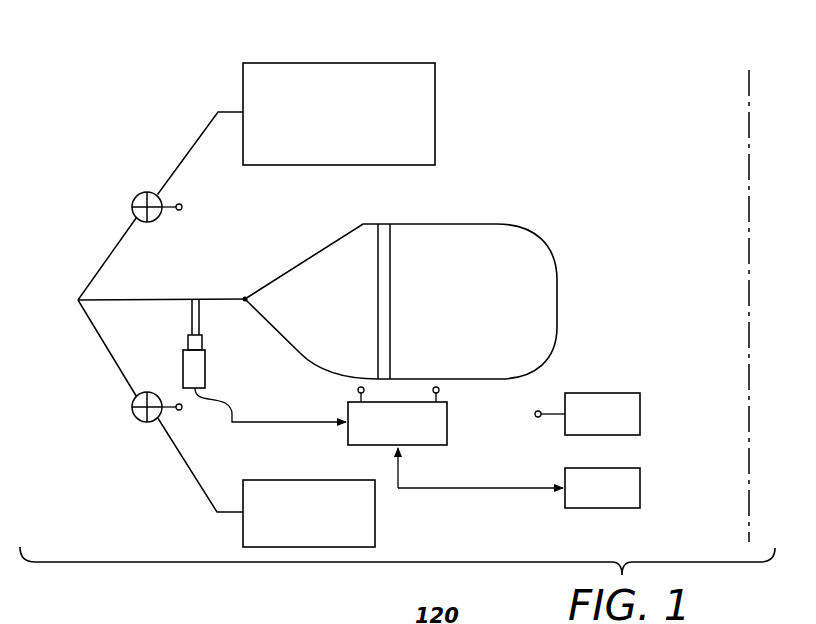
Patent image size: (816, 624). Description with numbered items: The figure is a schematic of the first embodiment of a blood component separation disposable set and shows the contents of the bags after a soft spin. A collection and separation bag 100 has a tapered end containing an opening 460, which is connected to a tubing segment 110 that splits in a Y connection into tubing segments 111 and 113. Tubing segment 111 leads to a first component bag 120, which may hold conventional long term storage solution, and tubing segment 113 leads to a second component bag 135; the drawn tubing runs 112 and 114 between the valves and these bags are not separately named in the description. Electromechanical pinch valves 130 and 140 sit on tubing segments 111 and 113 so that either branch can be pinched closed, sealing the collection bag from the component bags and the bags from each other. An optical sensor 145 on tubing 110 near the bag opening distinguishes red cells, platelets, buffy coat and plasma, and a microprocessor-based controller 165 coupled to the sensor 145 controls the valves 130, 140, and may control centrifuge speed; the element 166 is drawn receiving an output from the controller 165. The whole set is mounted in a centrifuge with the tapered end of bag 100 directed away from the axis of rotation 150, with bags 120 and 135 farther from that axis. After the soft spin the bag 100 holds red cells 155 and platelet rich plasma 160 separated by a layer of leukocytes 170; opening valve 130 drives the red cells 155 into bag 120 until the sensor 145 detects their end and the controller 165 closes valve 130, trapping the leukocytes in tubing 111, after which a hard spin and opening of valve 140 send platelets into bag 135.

The collection and separation bag 100 is at (533, 233).
The tubing segment 110 is at (178, 299).
The tubing segment 111 is at (98, 271).
The conduit from source 120 112 is at (188, 152).
The tubing segment 113 is at (94, 332).
The conduit from source 135 114 is at (183, 462).
The first component bag 120 is at (310, 63).
The electromechanical pinch valve 130 is at (132, 203).
The second component bag 135 is at (375, 521).
The electromechanical pinch valve 140 is at (132, 407).
The optical sensor 145 is at (205, 361).
The axis of rotation 150 is at (749, 92).
The red cells 155 is at (331, 300).
The platelet rich plasma 160 is at (474, 300).
The controller 165 is at (447, 428).
The indicator / output unit 166 is at (640, 488).
The layer of leukocytes 170 is at (385, 238).
The opening 460 is at (245, 299).